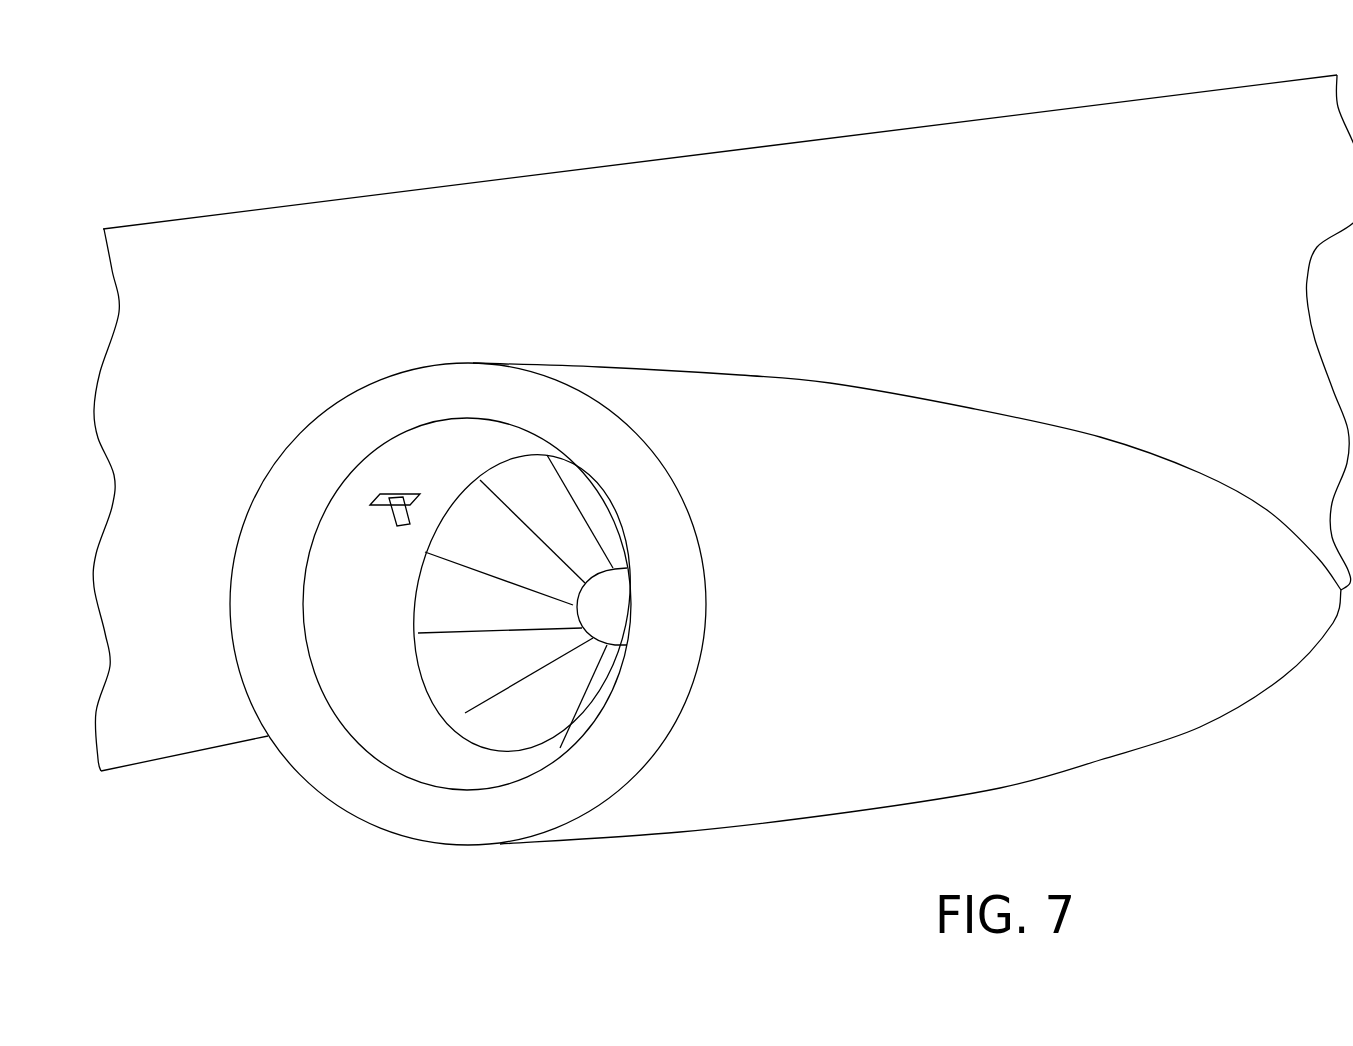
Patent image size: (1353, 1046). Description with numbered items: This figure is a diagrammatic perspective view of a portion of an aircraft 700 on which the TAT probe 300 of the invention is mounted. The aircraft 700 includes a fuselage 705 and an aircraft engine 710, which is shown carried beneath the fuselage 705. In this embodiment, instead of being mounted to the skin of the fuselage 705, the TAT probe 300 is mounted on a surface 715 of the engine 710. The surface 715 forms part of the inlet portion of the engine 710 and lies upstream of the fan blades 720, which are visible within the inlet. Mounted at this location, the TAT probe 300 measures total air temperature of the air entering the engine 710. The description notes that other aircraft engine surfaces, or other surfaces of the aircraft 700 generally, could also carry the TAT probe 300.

The aircraft 700 is at (225, 116).
The fuselage 705 is at (580, 213).
The aircraft engine 710 is at (860, 390).
The surface 715 is at (412, 752).
The fan blades 720 is at (537, 707).
The TAT probe 300 is at (390, 510).